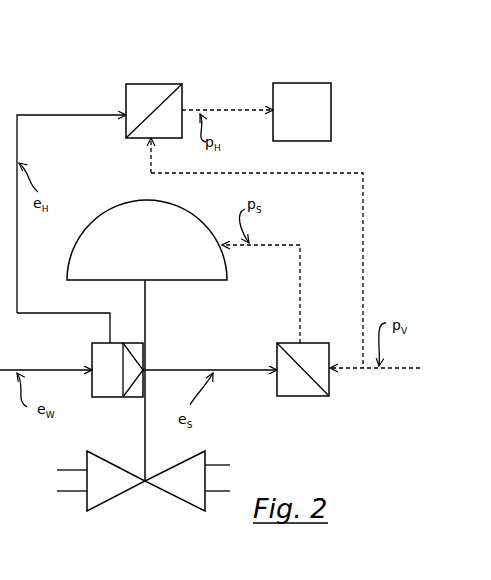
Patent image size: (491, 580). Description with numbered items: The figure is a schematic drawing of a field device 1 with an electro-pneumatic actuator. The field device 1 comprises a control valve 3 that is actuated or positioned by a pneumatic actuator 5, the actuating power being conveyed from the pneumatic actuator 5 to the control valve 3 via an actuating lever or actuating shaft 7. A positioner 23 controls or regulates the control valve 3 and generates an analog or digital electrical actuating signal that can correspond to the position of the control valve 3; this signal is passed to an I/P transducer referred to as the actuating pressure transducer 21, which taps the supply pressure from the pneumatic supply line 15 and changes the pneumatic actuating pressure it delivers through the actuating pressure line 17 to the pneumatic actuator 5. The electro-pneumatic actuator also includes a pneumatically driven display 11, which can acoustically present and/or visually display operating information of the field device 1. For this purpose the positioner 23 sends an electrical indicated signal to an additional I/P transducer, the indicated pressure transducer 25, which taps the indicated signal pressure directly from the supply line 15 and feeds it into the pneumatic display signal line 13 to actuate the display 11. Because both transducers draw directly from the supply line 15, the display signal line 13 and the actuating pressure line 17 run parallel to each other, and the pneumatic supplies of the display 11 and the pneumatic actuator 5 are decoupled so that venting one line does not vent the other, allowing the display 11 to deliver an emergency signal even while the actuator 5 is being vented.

The field device 1 is at (368, 94).
The control valve 3 is at (124, 494).
The pneumatic actuator 5 is at (166, 262).
The actuating lever or actuating shaft 7 is at (146, 325).
The pneumatically driven display 11 is at (295, 92).
The pneumatic display signal line 13 is at (235, 108).
The pneumatic supply line 15 is at (389, 372).
The actuating pressure line 17 is at (301, 296).
The actuating pressure transducer 21 is at (295, 390).
The positioner 23 is at (105, 390).
The indicated pressure transducer 25 is at (158, 92).